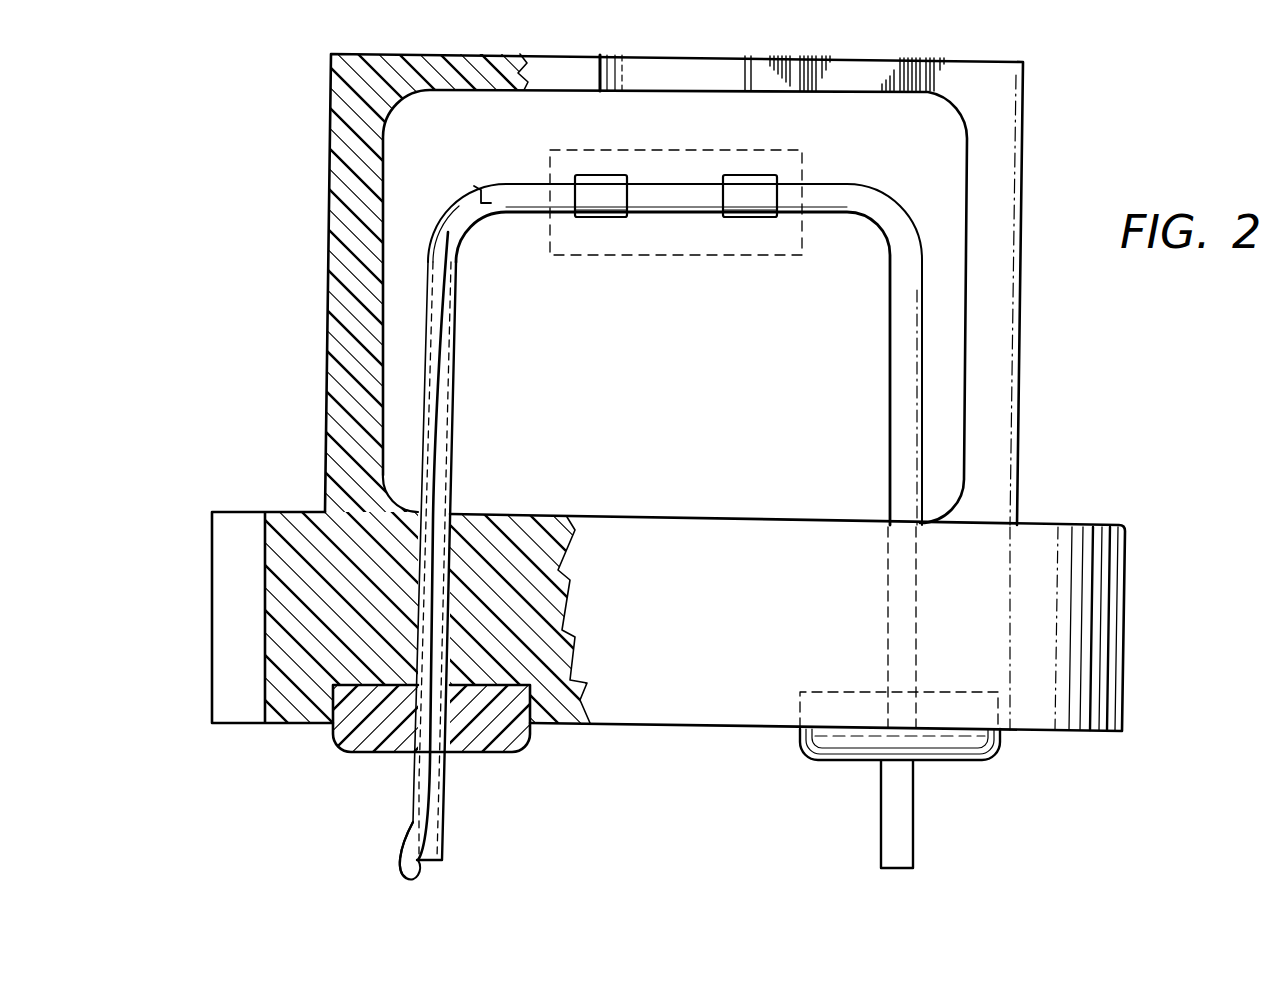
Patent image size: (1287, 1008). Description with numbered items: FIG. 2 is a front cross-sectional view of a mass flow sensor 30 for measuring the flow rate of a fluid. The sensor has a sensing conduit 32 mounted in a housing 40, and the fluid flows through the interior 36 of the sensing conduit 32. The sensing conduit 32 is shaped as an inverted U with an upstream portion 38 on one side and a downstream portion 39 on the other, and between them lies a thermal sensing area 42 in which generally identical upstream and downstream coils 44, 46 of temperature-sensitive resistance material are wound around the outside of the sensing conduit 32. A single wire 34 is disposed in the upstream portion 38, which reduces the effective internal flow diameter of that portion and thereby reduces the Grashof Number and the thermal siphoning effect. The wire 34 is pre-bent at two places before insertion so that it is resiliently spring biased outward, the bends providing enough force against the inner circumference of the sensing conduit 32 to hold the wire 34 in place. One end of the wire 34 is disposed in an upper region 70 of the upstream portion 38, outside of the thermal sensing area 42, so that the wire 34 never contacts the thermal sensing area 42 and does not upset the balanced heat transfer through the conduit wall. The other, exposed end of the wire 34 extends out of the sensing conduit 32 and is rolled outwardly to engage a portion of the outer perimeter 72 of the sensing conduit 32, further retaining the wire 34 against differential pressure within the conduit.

The mass flow sensor 30 is at (290, 803).
The sensing conduit 32 is at (895, 380).
The wire 34 is at (440, 328).
The interior 36 is at (492, 196).
The upstream portion 38 is at (455, 408).
The downstream portion 39 is at (890, 343).
The housing 40 is at (1032, 562).
The thermal sensing area 42 is at (717, 150).
The upstream coil 44 is at (597, 220).
The downstream coil 46 is at (748, 222).
The upper region 70 is at (427, 267).
The outer perimeter 72 is at (400, 850).